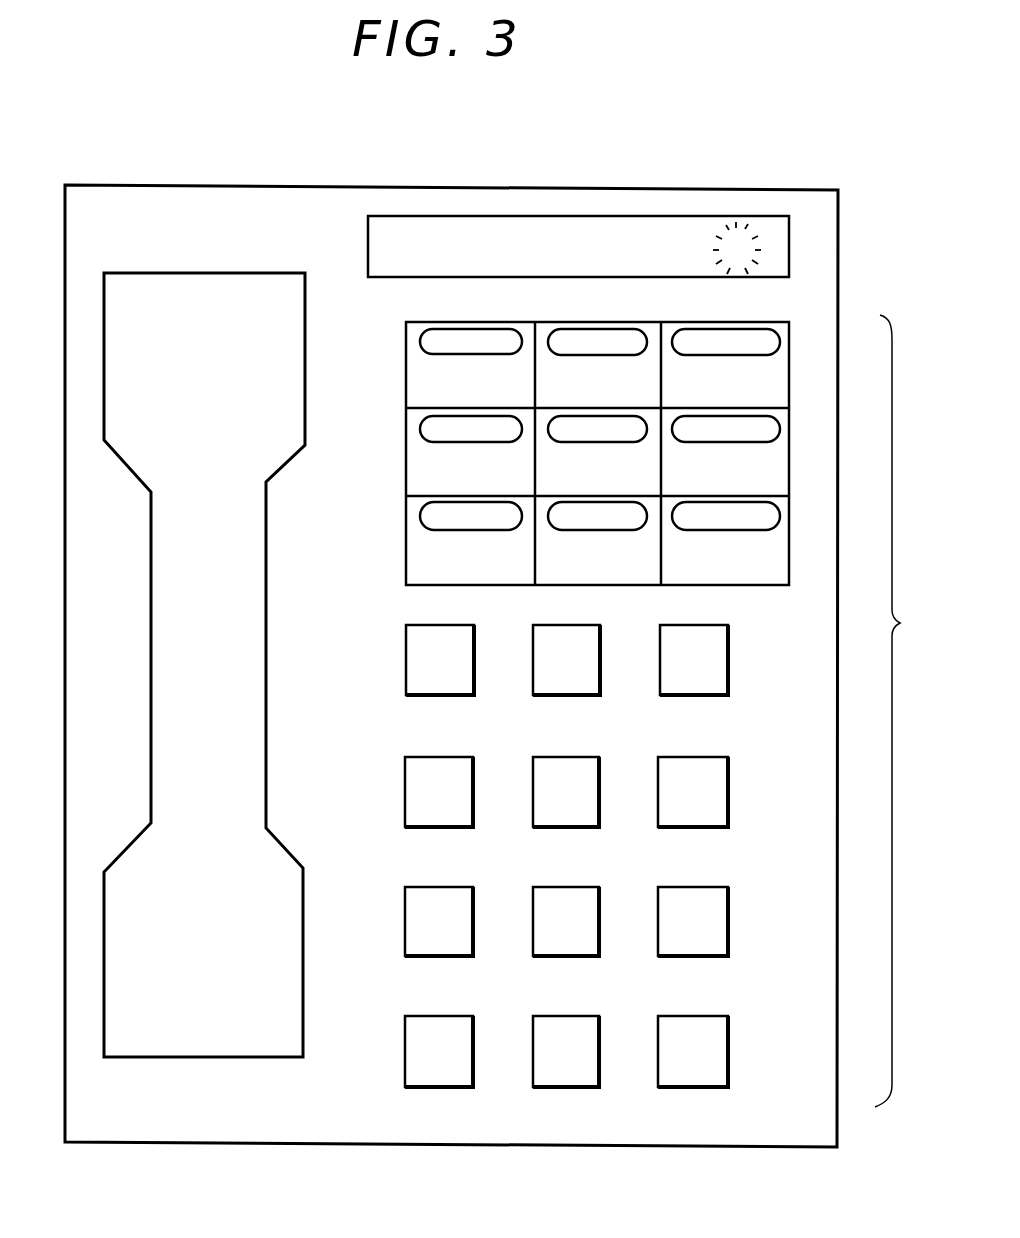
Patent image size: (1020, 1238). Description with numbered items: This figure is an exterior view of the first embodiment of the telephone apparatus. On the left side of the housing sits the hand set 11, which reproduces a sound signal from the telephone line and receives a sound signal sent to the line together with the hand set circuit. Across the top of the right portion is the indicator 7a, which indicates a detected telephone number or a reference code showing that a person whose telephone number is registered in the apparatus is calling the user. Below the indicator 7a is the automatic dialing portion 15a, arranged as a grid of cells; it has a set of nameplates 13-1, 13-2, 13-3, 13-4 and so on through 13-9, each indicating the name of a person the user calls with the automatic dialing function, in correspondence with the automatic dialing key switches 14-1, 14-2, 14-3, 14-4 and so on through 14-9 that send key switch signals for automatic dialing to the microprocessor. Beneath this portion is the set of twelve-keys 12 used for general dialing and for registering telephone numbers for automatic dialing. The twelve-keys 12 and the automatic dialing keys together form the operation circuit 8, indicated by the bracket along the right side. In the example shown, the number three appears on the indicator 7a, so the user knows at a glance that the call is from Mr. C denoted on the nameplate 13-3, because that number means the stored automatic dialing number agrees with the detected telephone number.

The hand set 11 is at (260, 296).
The automatic dialing portion 15a is at (560, 408).
The indicator 7a is at (688, 218).
The nameplate 13-1 is at (411, 337).
The nameplate 13-2 is at (543, 338).
The nameplate 13-3 is at (669, 338).
The nameplate 13-4 is at (428, 470).
The nameplate 13-9 is at (728, 573).
The automatic dialing key switch 14-1 is at (496, 348).
The automatic dialing key switch 14-2 is at (627, 346).
The automatic dialing key switch 14-3 is at (757, 347).
The automatic dialing key switch 14-4 is at (430, 433).
The automatic dialing key switch 14-9 is at (748, 520).
The set of twelve-keys 12 is at (733, 907).
The operation circuit 8 is at (898, 711).